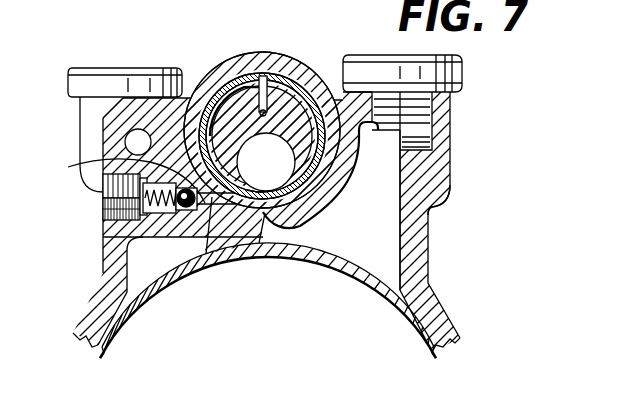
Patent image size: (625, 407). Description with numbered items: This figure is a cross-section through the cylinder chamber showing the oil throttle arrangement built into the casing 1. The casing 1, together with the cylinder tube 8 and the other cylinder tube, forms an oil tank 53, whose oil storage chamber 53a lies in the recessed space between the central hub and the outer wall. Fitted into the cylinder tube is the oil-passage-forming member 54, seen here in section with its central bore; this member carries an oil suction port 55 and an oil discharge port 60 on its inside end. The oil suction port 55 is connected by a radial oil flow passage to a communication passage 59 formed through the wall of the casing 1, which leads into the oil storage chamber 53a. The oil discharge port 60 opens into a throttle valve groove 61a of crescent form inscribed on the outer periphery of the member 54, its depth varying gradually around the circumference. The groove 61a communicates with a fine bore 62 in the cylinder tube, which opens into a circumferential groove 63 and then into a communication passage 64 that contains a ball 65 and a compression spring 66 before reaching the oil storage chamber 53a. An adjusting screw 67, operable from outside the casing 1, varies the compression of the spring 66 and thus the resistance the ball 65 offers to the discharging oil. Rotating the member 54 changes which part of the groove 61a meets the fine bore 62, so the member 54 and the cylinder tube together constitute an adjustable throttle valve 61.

The casing 1 is at (422, 265).
The cylinder tube 8 is at (367, 288).
The oil tank 53 is at (437, 209).
The oil storage chamber 53a is at (383, 213).
The oil-passage-forming member 54 is at (294, 110).
The oil suction port 55 is at (280, 168).
The communication passage 59 is at (134, 142).
The oil discharge port 60 is at (283, 112).
The adjustable throttle valve 61 is at (321, 88).
The throttle valve groove 61a is at (211, 100).
The fine bore 62 is at (262, 77).
The circumferential groove 63 is at (257, 244).
The communication passage 64 is at (212, 236).
The ball 65 is at (120, 181).
The compression spring 66 is at (104, 235).
The adjusting screw 67 is at (113, 197).